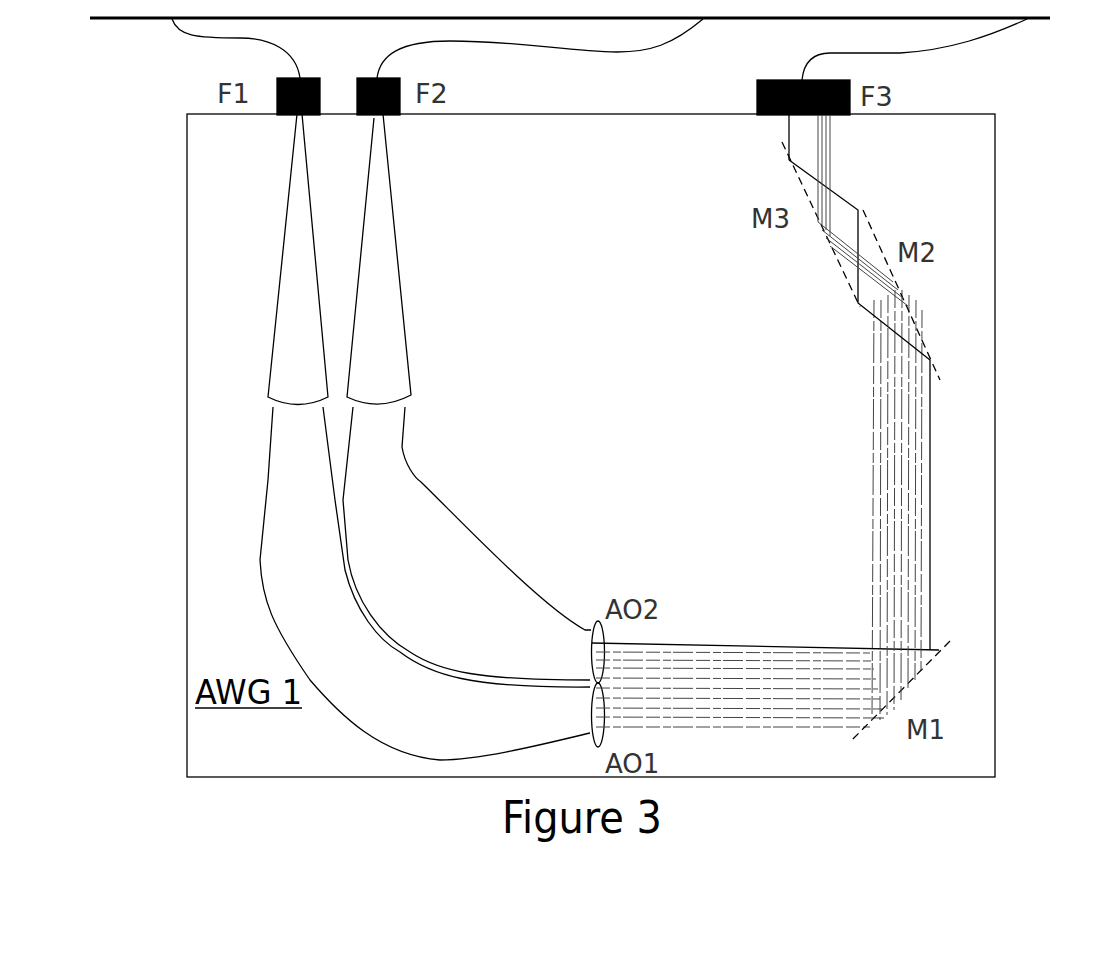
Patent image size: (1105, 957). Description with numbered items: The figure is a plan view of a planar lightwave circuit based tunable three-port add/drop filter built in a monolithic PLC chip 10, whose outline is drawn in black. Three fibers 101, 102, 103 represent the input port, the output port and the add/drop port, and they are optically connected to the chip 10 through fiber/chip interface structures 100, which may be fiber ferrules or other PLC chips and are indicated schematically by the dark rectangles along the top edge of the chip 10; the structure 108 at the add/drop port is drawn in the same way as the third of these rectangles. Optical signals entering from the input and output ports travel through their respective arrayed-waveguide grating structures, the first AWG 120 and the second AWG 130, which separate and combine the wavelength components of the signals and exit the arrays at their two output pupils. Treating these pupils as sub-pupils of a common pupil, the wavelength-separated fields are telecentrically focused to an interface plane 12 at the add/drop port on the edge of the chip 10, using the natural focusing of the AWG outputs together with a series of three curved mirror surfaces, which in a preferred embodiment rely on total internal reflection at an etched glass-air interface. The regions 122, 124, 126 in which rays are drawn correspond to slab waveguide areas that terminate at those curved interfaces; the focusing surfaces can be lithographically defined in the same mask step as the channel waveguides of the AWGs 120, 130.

The monolithic PLC chip 10 is at (611, 303).
The interface plane 12 is at (787, 116).
The fiber/chip interface structures 100 is at (377, 77).
The fiber 101 is at (199, 37).
The fiber 102 is at (460, 41).
The fiber 103 is at (960, 44).
The fiber coupler F3 108 is at (757, 90).
The arrayed-waveguide grating AWG 1 120 is at (275, 507).
The slab waveguide region 122 is at (728, 665).
The slab waveguide region 124 is at (887, 453).
The slab waveguide region 126 is at (863, 225).
The arrayed-waveguide grating AWG 2 130 is at (423, 482).